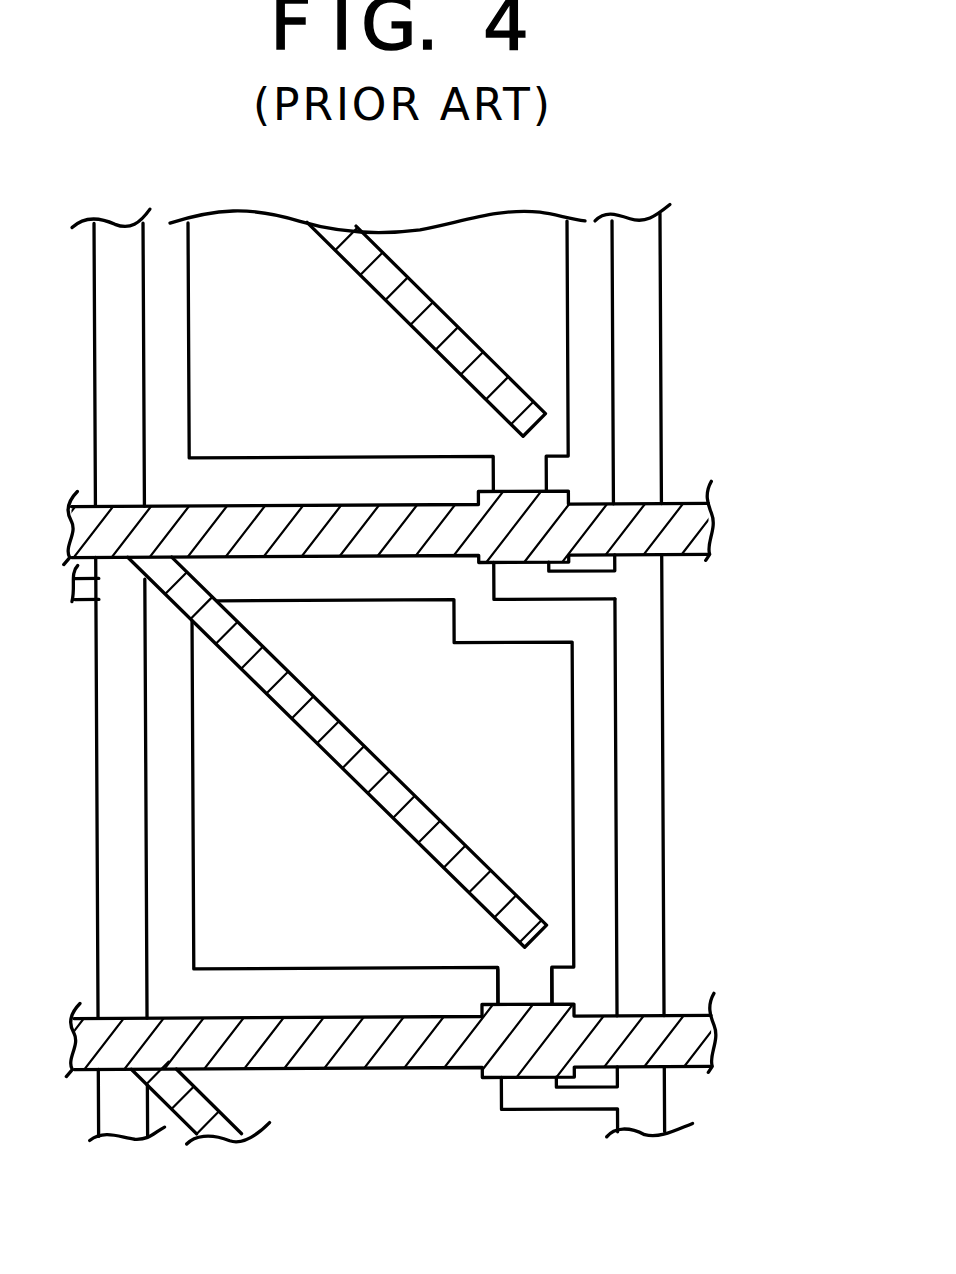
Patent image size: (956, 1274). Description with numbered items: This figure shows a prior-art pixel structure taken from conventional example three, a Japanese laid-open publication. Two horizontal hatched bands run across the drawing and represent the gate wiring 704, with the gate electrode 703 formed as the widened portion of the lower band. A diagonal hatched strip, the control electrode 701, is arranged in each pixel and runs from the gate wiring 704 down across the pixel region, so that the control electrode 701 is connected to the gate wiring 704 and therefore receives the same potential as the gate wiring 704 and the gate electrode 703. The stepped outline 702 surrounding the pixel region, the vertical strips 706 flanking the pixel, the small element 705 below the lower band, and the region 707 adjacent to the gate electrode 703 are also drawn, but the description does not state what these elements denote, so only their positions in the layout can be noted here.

The control electrode 701 is at (395, 773).
The pixel electrode 702 is at (570, 678).
The gate electrode 703 is at (540, 1050).
The gate wiring 704 is at (680, 530).
The drain electrode 705 is at (522, 1090).
The signal line 706 is at (650, 358).
The contact hole 707 is at (522, 985).